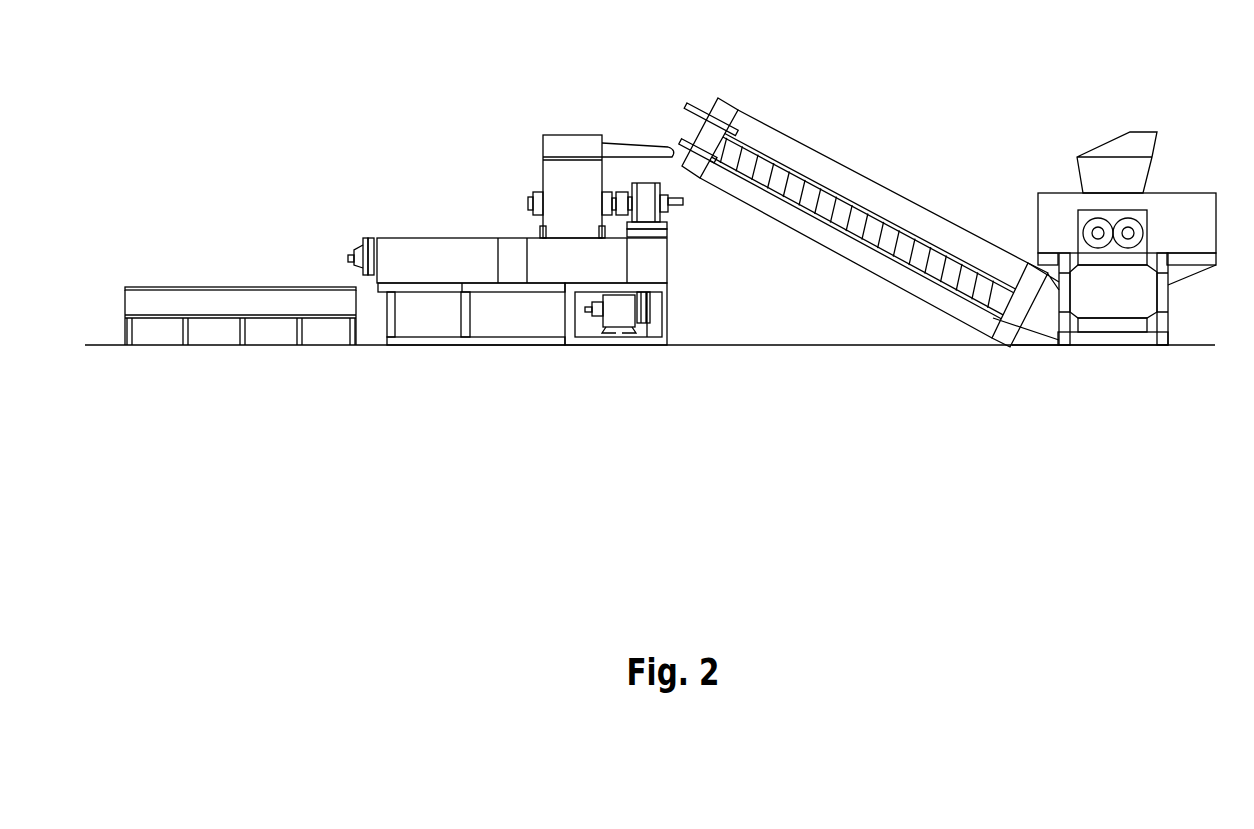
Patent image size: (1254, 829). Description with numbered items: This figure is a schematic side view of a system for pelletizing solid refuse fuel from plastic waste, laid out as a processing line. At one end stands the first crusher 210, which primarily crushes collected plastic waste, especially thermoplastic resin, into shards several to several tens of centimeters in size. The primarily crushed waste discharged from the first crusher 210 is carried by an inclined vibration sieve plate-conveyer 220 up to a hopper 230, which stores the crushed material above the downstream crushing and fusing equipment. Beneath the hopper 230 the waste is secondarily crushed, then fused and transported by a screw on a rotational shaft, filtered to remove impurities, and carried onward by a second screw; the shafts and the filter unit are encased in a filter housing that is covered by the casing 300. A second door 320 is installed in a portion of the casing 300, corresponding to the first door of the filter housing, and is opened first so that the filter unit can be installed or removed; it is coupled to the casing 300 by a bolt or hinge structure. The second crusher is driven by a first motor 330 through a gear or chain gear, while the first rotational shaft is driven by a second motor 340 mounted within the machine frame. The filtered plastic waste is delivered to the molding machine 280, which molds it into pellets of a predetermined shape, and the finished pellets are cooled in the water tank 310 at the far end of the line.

The first crusher 210 is at (1140, 125).
The vibration sieve plate-conveyer 220 is at (883, 228).
The hopper 230 is at (573, 135).
The molding machine 280 is at (352, 252).
The casing 300 is at (522, 349).
The water tank 310 is at (247, 287).
The second door 320 is at (510, 277).
The first motor 330 is at (647, 183).
The second motor 340 is at (620, 318).